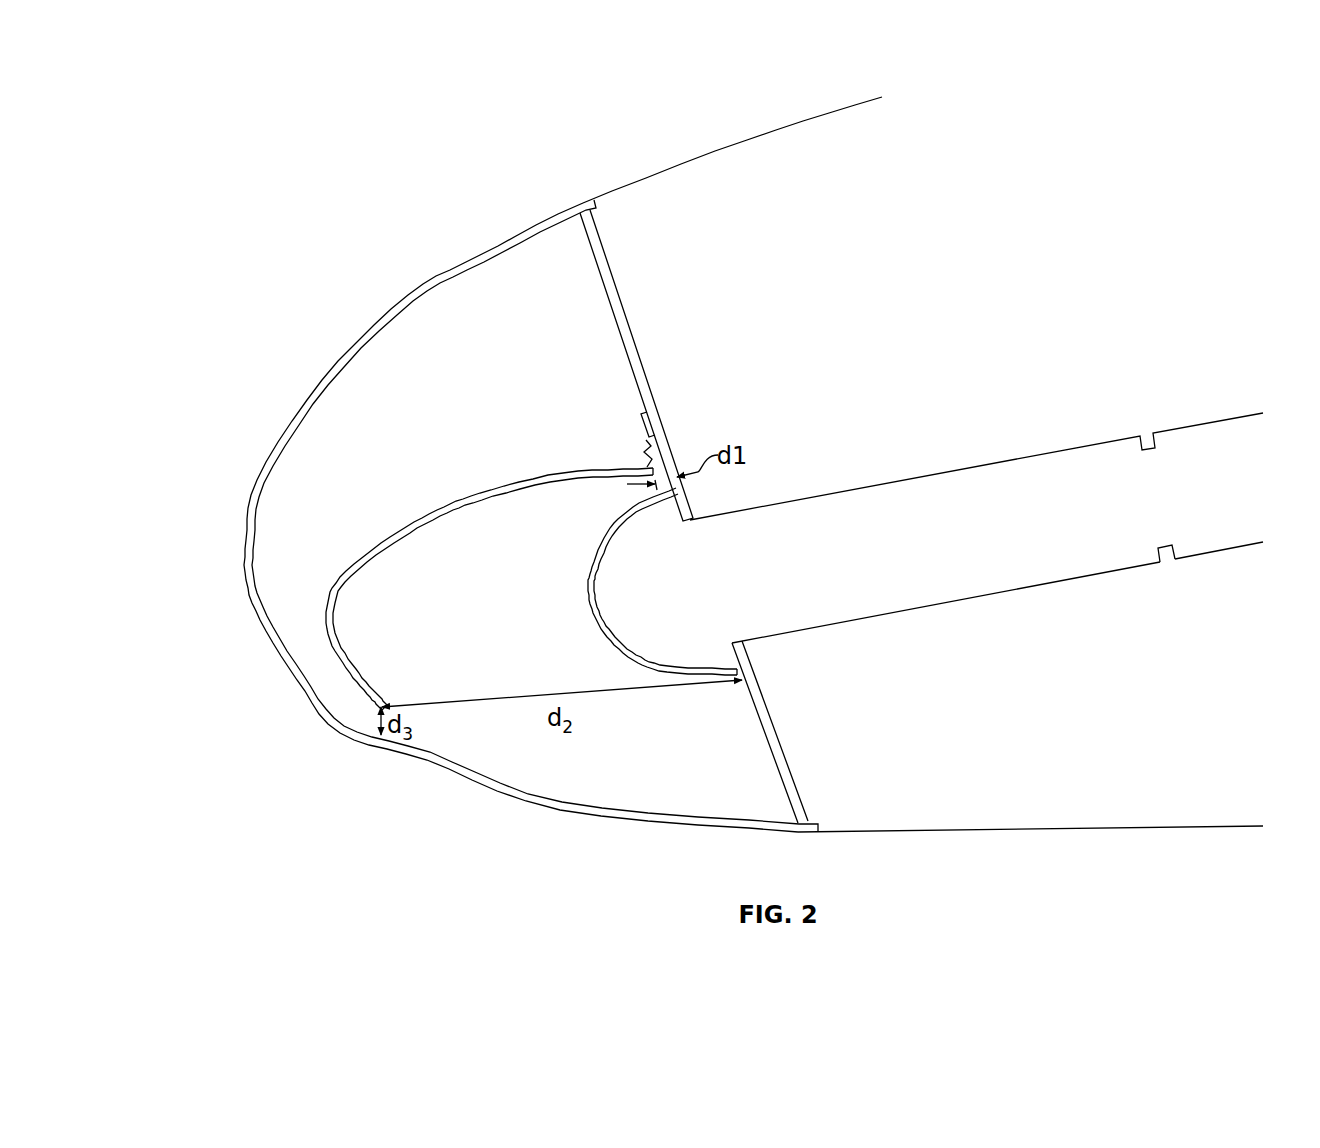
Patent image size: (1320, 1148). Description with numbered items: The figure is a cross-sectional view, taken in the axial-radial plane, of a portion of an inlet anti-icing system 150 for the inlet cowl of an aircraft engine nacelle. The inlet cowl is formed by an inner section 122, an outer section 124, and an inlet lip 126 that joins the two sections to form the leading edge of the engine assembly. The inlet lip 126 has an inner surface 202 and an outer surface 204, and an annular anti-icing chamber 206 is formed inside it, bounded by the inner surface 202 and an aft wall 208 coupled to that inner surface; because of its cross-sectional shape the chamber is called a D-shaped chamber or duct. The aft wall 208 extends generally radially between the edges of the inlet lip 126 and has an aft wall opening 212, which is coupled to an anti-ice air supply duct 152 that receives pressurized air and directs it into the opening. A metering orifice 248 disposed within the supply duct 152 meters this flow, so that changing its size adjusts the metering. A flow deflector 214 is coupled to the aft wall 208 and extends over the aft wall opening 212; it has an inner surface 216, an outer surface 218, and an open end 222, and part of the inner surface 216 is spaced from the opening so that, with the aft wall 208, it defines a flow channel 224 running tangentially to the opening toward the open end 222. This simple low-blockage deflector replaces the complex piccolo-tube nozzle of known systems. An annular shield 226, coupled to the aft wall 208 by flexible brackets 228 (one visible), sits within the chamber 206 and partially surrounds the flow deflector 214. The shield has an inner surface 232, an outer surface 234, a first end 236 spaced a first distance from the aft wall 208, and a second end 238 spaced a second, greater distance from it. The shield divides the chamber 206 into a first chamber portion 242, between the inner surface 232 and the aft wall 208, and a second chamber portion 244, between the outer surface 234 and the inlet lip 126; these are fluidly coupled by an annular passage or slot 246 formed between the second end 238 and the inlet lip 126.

The inner section 122 is at (888, 830).
The outer section 124 is at (747, 140).
The inlet lip 126 is at (490, 516).
The inlet anti-icing system 150 is at (1054, 132).
The anti-ice air supply duct 152 is at (955, 465).
The inner surface 202 is at (322, 385).
The outer surface 204 is at (252, 493).
The annular anti-icing chamber 206 is at (412, 450).
The aft wall 208 is at (645, 345).
The aft wall opening 212 is at (991, 651).
The flow deflector 214 is at (586, 580).
The inner surface 216 is at (607, 545).
The outer surface 218 is at (607, 528).
The open end 222 is at (635, 640).
The flow channel 224 is at (637, 611).
The annular shield 226 is at (324, 585).
The flexible bracket 228 is at (643, 420).
The inner surface 232 is at (392, 538).
The outer surface 234 is at (355, 540).
The first end 236 is at (645, 468).
The second end 238 is at (378, 686).
The first chamber portion 242 is at (592, 773).
The second chamber portion 244 is at (282, 530).
The annular passage or slot 246 is at (372, 717).
The metering orifice 248 is at (1165, 543).